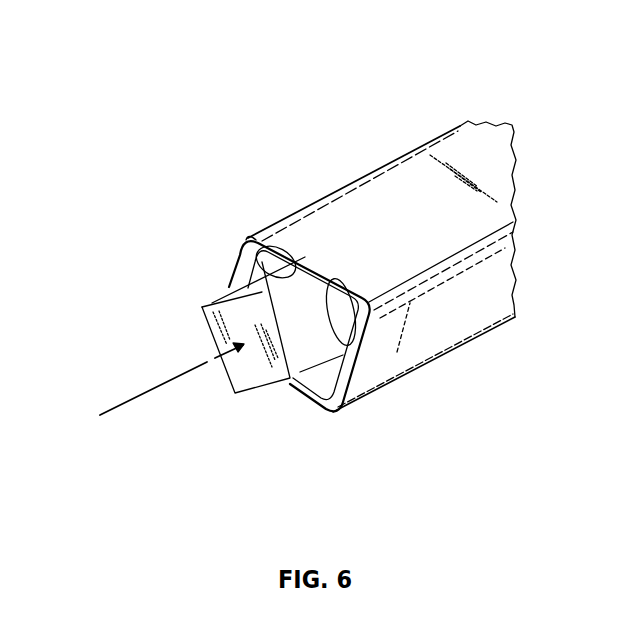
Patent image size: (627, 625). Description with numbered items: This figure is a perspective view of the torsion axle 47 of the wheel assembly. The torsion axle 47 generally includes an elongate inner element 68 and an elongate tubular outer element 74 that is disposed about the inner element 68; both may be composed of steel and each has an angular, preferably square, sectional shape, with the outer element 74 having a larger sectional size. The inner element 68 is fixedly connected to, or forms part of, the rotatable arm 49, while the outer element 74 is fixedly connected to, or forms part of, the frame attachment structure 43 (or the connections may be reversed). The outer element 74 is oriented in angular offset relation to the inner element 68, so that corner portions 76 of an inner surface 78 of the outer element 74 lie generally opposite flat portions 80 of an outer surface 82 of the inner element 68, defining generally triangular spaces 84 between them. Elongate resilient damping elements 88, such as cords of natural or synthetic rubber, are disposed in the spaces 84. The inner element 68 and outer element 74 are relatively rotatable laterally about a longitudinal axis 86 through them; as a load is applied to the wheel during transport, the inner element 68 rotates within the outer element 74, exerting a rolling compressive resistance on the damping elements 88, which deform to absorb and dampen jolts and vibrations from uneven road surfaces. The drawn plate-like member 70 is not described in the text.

The torsion axle 47 is at (501, 102).
The frame attachment structure 43 is at (493, 267).
The outer element 74 is at (498, 335).
The corner portions 76 is at (370, 297).
The inner surface 78 is at (250, 245).
The flat portions 80 is at (237, 293).
The outer surface 82 is at (297, 307).
The spaces 84 is at (262, 268).
The damping elements 88 is at (263, 265).
The plate 70 is at (209, 302).
The inner element 68 is at (223, 377).
The longitudinal axis 86 is at (148, 392).
The rotatable arm 49 is at (250, 392).